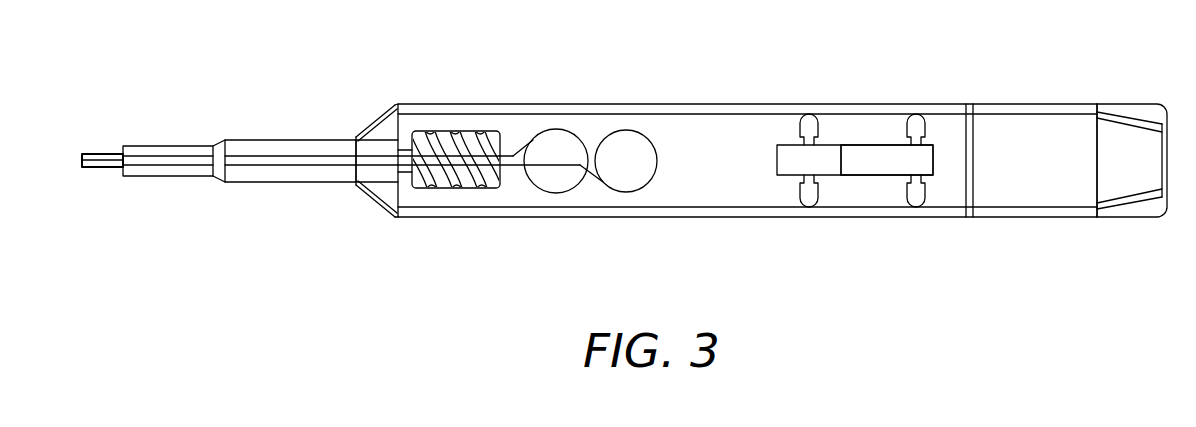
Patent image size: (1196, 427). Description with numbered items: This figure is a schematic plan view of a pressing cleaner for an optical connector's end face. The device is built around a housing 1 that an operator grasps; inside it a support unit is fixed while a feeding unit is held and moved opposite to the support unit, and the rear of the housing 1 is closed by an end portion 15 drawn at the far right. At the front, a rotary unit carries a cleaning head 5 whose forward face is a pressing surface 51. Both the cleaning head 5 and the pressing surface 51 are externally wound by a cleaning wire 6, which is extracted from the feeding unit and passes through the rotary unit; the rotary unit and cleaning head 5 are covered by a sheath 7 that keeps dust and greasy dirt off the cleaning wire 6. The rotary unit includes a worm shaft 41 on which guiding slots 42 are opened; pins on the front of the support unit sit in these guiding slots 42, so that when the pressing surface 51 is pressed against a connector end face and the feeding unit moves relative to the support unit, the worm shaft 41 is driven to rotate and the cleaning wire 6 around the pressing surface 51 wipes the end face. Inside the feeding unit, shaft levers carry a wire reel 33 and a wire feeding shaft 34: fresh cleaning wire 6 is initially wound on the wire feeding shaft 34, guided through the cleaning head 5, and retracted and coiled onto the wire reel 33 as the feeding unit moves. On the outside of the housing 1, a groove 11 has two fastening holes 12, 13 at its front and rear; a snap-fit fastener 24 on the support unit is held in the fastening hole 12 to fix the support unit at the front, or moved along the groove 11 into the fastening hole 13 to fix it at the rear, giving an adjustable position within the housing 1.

The housing 1 is at (737, 113).
The cleaning head 5 is at (102, 168).
The pressing surface 51 is at (82, 153).
The cleaning wire 6 is at (513, 166).
The sheath 7 is at (327, 138).
The groove 11 is at (862, 158).
The fastening hole 12 is at (810, 193).
The fastening hole 13 is at (922, 197).
The end cap 15 is at (1080, 110).
The snap-fit fastener 24 is at (813, 165).
The wire reel 33 is at (640, 190).
The wire feeding shaft 34 is at (560, 193).
The worm shaft 41 is at (437, 133).
The guiding slots 42 is at (462, 137).